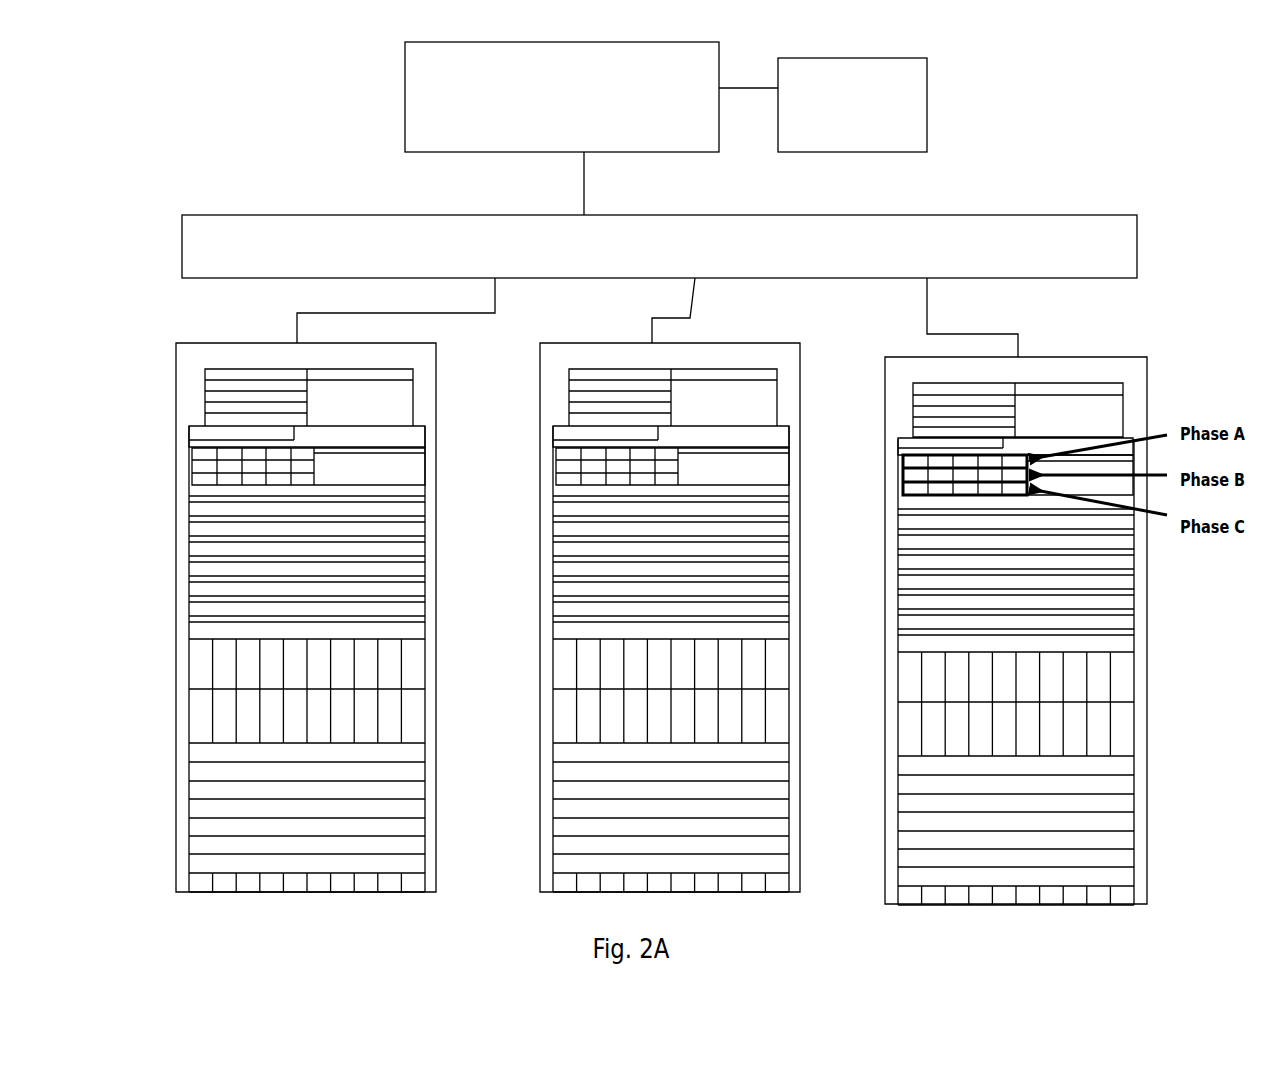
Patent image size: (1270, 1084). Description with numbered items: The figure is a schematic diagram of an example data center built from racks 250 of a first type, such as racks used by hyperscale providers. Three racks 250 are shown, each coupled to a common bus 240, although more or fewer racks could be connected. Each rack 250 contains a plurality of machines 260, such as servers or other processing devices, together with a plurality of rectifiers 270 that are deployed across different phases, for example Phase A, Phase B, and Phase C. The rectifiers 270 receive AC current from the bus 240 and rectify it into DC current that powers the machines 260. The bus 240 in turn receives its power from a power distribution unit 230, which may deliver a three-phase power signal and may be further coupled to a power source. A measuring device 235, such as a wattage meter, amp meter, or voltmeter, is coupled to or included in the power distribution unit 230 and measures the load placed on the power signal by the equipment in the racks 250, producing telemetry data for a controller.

The power distribution unit 230 is at (562, 128).
The measuring device 235 is at (823, 105).
The bus 240 is at (659, 286).
The rack 250 is at (176, 357).
The machine 260 is at (192, 506).
The rectifier 270 is at (192, 463).